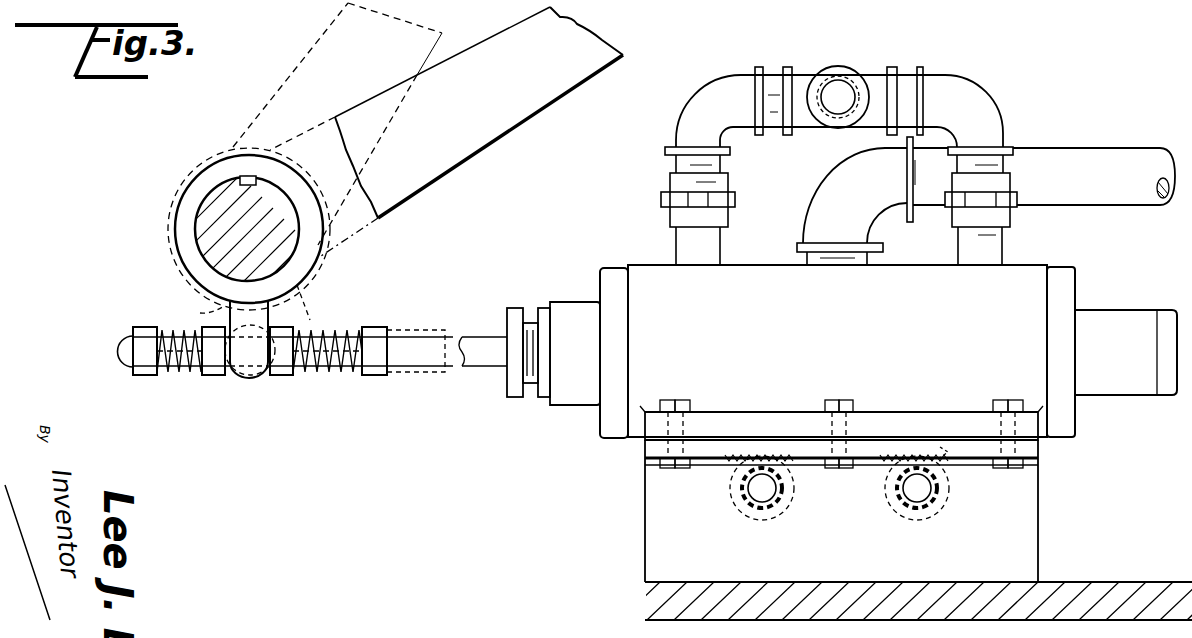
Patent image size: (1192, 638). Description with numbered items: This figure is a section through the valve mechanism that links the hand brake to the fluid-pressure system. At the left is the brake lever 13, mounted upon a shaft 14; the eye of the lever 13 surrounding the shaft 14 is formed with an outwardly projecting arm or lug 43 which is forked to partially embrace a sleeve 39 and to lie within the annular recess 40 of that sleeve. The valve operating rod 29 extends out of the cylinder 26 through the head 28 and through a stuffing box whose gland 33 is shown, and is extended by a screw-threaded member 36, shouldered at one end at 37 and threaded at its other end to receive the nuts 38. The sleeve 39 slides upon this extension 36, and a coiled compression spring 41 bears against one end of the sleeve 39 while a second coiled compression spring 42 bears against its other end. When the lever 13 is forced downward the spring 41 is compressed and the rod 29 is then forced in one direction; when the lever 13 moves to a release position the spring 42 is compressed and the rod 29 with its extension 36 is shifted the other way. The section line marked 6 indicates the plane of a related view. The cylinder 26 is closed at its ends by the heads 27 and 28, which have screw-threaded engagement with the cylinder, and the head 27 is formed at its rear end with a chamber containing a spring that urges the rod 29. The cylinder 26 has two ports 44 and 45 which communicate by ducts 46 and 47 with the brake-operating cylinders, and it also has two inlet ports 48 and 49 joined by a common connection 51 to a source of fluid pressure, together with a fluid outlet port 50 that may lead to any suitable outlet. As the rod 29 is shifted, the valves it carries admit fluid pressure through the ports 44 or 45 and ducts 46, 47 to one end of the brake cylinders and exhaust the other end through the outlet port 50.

The brake lever 13 is at (378, 122).
The shaft 14 is at (207, 238).
The arm or lug 43 is at (223, 307).
The member 36 is at (340, 347).
The section line 6 is at (103, 312).
The nuts 38 is at (150, 368).
The coiled compression spring 41 is at (188, 373).
The sleeve 39 is at (218, 375).
The annular recess 40 is at (255, 380).
The coiled compression spring 42 is at (333, 377).
The shoulder 37 is at (378, 378).
The valve operating rod 29 is at (436, 360).
The gland 33 is at (522, 380).
The head 28 is at (607, 272).
The inlet port 48 is at (687, 248).
The cylinder 26 is at (837, 351).
The head 27 is at (1070, 276).
The inlet port 49 is at (990, 247).
The fluid outlet port 50 is at (986, 201).
The common connection 51 is at (840, 95).
The port 44 is at (738, 447).
The port 45 is at (948, 452).
The duct 46 is at (790, 503).
The duct 47 is at (940, 508).